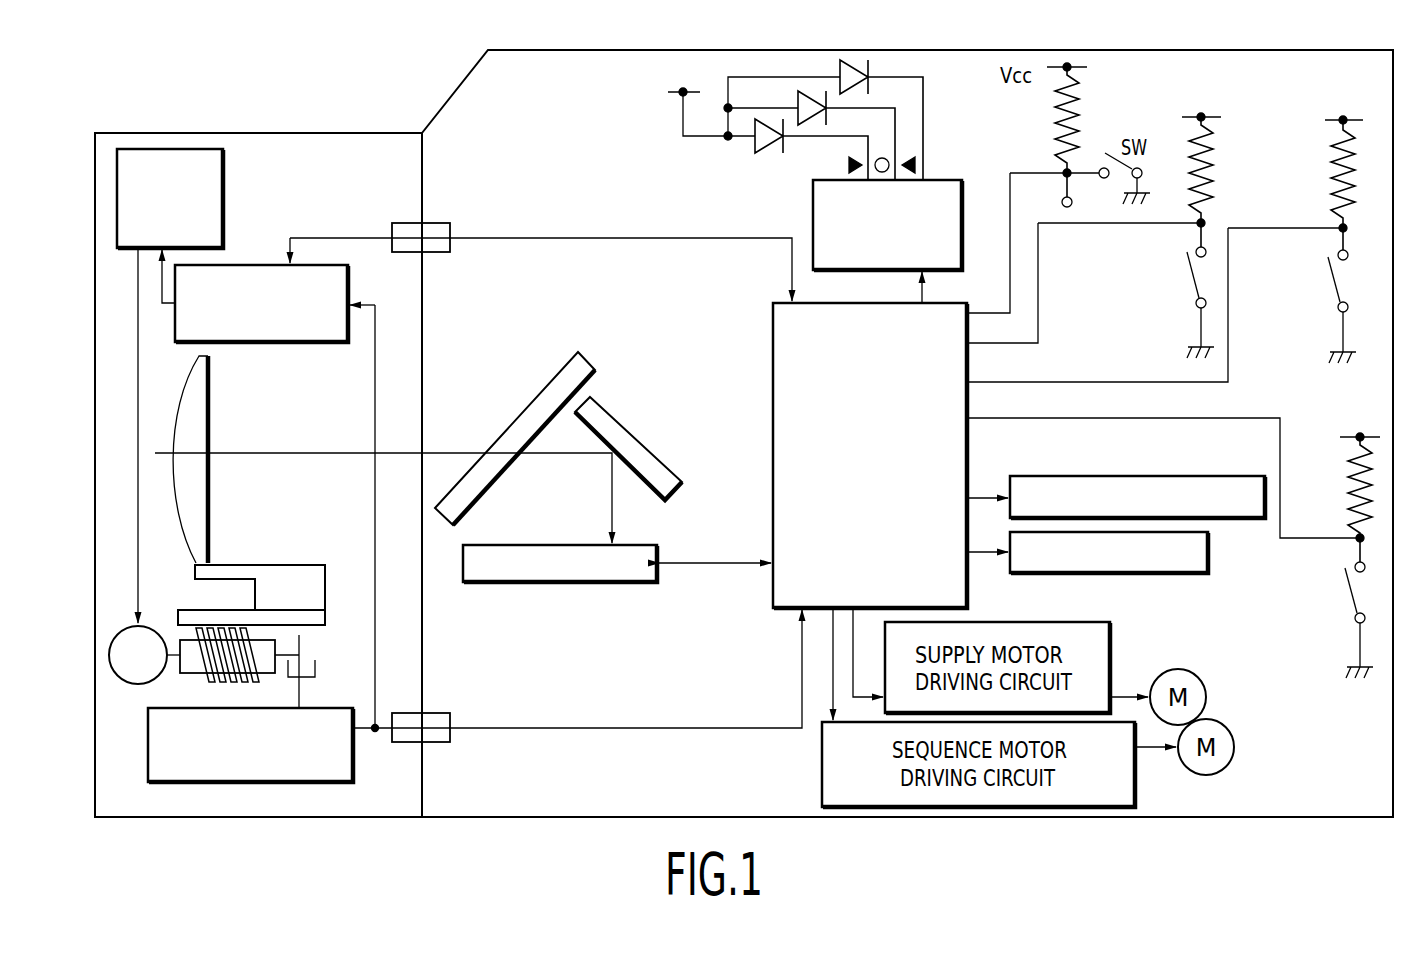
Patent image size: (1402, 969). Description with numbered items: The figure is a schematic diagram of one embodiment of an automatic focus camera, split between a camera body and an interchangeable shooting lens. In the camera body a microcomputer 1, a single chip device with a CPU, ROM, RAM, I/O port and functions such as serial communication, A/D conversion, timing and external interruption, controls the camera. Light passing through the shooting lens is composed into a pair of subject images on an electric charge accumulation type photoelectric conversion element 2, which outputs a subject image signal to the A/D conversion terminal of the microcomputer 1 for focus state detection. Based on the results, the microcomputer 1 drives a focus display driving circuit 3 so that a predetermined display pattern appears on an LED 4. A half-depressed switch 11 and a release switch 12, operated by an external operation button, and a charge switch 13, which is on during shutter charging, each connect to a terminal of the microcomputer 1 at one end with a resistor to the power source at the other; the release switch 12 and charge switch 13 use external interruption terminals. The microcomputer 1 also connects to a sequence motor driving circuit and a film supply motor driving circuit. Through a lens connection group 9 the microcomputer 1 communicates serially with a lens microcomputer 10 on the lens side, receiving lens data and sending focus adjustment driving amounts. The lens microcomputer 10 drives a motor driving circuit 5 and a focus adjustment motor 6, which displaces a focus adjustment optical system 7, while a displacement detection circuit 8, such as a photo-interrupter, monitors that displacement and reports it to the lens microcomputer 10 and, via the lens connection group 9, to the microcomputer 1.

The microcomputer 1 is at (772, 338).
The photoelectric conversion element 2 is at (497, 582).
The focus display driving circuit 3 is at (943, 180).
The LED 4 is at (815, 77).
The motor driving circuit 5 is at (224, 191).
The focus adjustment motor 6 is at (138, 685).
The focus adjustment optical system 7 is at (211, 393).
The displacement detection circuit 8 is at (333, 708).
The lens connection group 9 is at (437, 223).
The lens microcomputer 10 is at (303, 343).
The half-depressed switch 11 is at (1295, 224).
The release switch 12 is at (1129, 221).
The charge switch 13 is at (1344, 540).